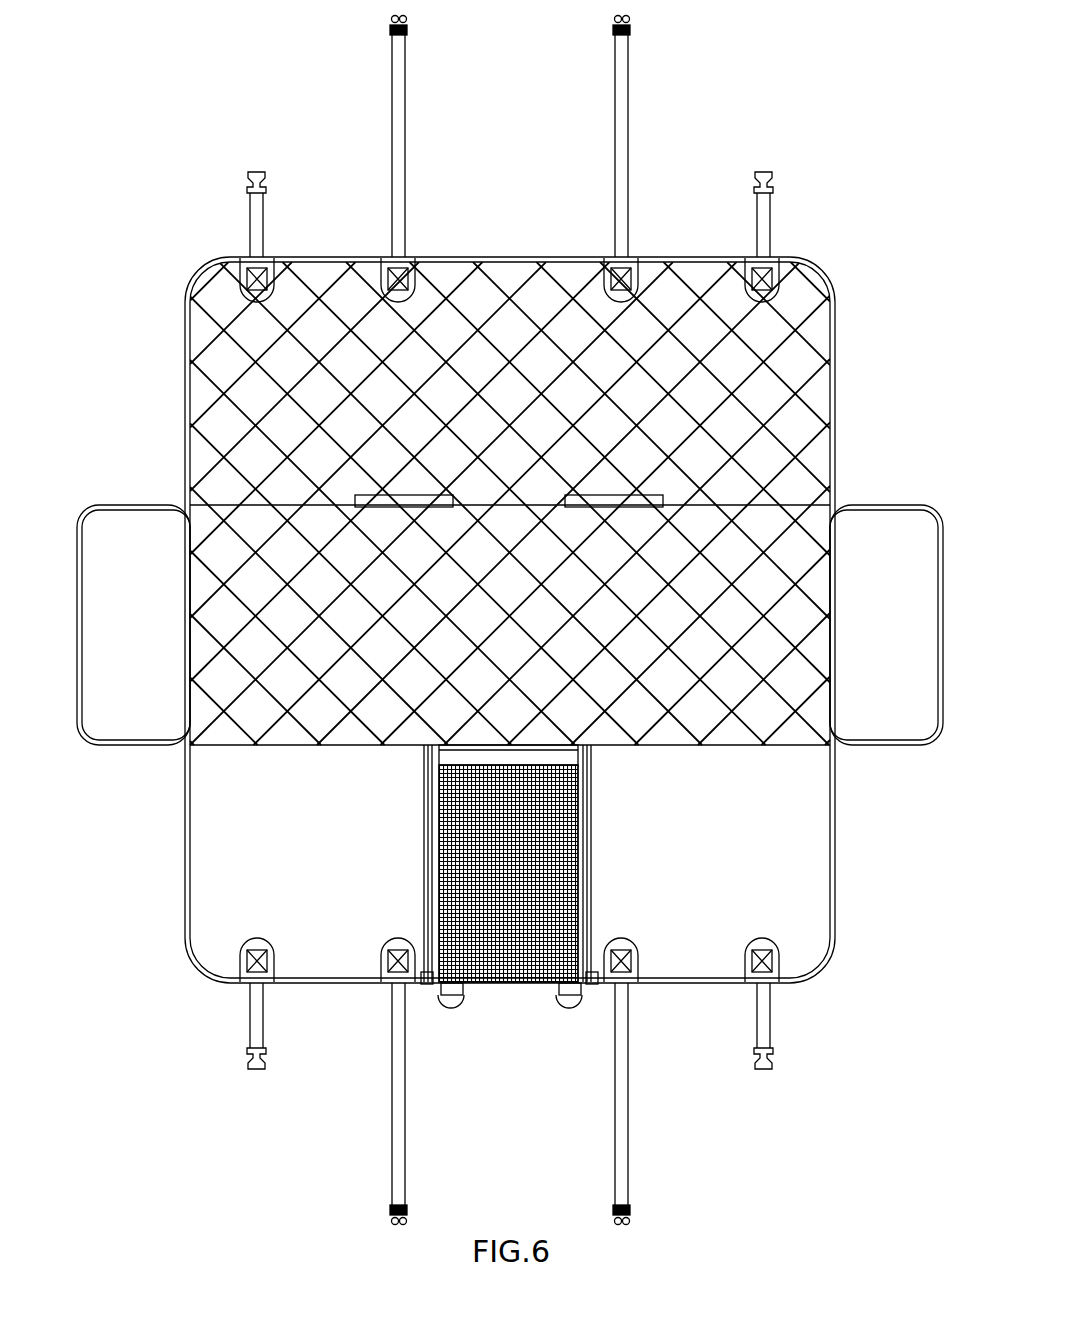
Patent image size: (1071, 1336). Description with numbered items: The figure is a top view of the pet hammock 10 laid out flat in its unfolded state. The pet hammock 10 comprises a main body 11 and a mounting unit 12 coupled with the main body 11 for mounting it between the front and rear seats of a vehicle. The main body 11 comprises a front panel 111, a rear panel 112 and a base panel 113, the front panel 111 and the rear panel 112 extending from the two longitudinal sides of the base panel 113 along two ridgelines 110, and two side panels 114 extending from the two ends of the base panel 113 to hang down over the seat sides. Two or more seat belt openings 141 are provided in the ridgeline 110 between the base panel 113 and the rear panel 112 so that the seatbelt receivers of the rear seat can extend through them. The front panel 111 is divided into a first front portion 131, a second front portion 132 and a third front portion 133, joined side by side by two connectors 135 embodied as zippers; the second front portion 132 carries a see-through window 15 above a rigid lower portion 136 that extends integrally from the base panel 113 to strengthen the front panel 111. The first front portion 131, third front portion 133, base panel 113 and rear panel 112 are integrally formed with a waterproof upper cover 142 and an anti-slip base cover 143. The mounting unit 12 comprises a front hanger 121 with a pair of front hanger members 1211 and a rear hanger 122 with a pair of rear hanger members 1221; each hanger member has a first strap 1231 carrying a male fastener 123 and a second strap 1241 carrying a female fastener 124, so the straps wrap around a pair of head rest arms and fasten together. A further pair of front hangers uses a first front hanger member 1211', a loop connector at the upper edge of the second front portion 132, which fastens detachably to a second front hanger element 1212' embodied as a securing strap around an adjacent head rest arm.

The pet hammock 10 is at (172, 52).
The main body 11 is at (175, 256).
The mounting unit 12 is at (143, 80).
The window 15 is at (473, 985).
The ridgeline 110 is at (720, 507).
The front panel 111 is at (215, 812).
The rear panel 112 is at (257, 380).
The base panel 113 is at (265, 530).
The side panel 114 is at (160, 550).
The front hanger 121 is at (190, 1165).
The rear hanger 122 is at (160, 122).
The male fastener 123 is at (393, 40).
The female fastener 124 is at (255, 172).
The first front portion 131 is at (800, 905).
The second front portion 132 is at (488, 985).
The third front portion 133 is at (222, 910).
The connector 135 is at (425, 985).
The lower portion 136 is at (545, 985).
The seat belt opening 141 is at (611, 494).
The upper cover 142 is at (757, 392).
The base cover 143 is at (785, 545).
The front hanger member 1211 is at (180, 1142).
The first front hanger member 1211' is at (650, 1035).
The second front hanger element 1212' is at (382, 1055).
The rear hanger member 1221 is at (170, 167).
The first strap 1231 is at (397, 78).
The second strap 1241 is at (258, 230).